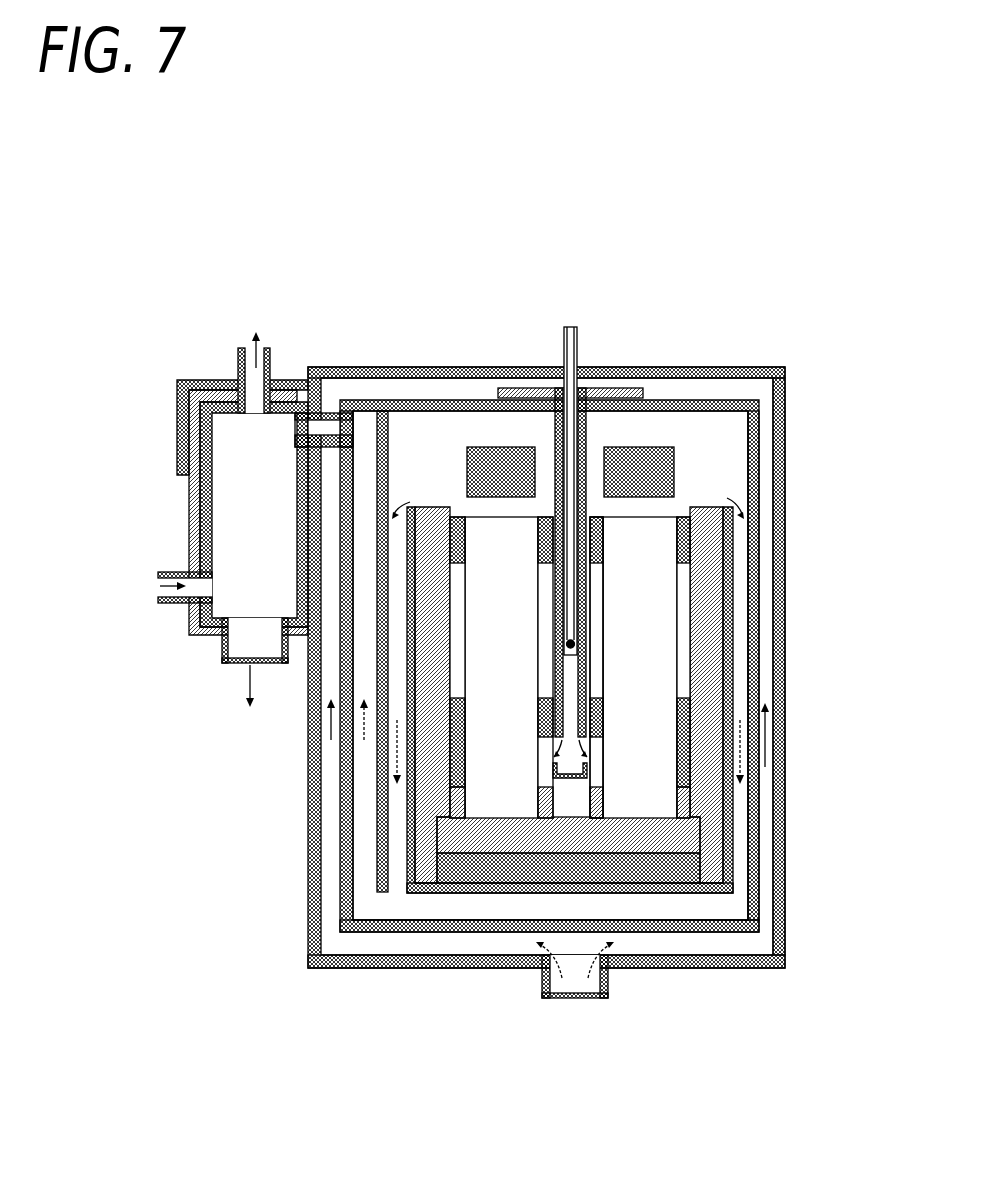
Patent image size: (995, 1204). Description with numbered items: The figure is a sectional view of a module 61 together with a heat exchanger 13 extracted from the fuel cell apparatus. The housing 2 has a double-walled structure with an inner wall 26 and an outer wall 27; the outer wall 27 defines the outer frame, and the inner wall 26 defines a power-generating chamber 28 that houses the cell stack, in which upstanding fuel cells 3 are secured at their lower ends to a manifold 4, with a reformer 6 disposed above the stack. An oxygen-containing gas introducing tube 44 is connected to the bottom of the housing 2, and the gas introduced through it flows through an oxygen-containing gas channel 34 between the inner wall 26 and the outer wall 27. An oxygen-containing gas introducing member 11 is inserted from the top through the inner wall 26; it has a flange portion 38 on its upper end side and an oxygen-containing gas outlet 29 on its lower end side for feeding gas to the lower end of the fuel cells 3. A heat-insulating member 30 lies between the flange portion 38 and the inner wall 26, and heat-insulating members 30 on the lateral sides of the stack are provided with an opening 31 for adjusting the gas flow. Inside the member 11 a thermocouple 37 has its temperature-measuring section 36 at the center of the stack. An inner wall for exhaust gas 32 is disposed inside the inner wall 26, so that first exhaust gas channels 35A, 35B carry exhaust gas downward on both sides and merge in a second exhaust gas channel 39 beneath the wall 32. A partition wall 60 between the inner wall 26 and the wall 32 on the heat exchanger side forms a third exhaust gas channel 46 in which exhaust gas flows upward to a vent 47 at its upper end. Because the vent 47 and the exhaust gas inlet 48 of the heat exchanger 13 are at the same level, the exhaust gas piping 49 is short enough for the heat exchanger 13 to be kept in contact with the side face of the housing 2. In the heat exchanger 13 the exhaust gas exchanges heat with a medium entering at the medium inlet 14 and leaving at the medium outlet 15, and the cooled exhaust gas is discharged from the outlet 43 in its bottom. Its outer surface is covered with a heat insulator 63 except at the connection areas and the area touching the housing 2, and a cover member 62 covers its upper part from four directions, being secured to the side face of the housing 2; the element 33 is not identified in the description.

The housing 2 is at (560, 374).
The fuel cell 3 is at (745, 495).
The manifold 4 is at (718, 833).
The reformer 6 is at (665, 447).
The oxygen-containing gas introducing member 11 is at (475, 428).
The heat exchanger 13 is at (178, 377).
The medium inlet 14 is at (168, 605).
The medium outlet 15 is at (235, 350).
The inner wall 26 is at (756, 486).
The outer wall 27 is at (718, 366).
The power-generating chamber 28 is at (407, 427).
The oxygen-containing gas outlet 29 is at (548, 745).
The heat-insulating member 30 is at (647, 388).
The opening 31 is at (593, 663).
The inner wall for exhaust gas 32 is at (726, 565).
The bottom wall of outer container 33 is at (410, 940).
The oxygen-containing gas channel 34 is at (767, 811).
The first exhaust gas channel 35A is at (400, 812).
The first exhaust gas channel 35B is at (736, 865).
The temperature-measuring section 36 is at (567, 640).
The thermocouple 37 is at (579, 357).
The flange portion 38 is at (595, 395).
The second exhaust gas channel 39 is at (675, 907).
The outlet 43 is at (222, 657).
The oxygen-containing gas introducing tube 44 is at (540, 982).
The third exhaust gas channel 46 is at (365, 792).
The vent 47 is at (355, 423).
The exhaust gas inlet 48 is at (297, 417).
The exhaust gas piping 49 is at (332, 425).
The partition wall 60 is at (383, 857).
The module 61 is at (378, 272).
The cover member 62 is at (190, 412).
The heat insulator 63 is at (188, 532).